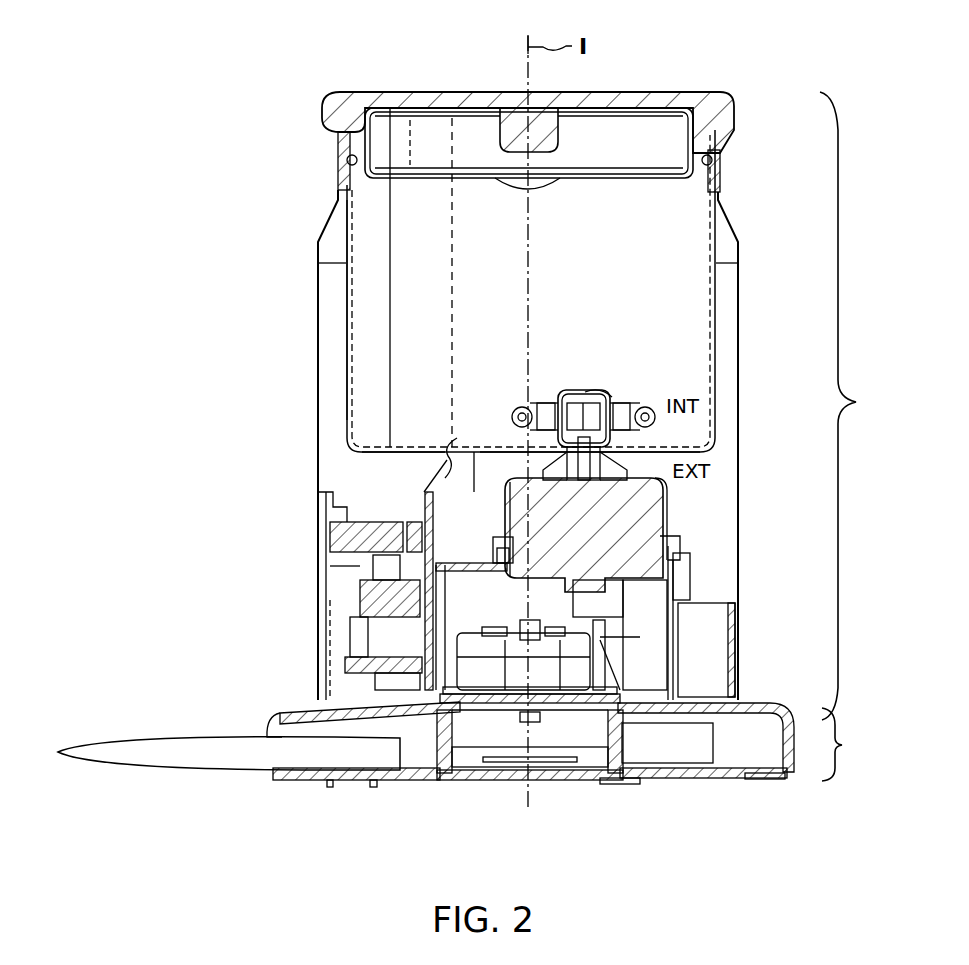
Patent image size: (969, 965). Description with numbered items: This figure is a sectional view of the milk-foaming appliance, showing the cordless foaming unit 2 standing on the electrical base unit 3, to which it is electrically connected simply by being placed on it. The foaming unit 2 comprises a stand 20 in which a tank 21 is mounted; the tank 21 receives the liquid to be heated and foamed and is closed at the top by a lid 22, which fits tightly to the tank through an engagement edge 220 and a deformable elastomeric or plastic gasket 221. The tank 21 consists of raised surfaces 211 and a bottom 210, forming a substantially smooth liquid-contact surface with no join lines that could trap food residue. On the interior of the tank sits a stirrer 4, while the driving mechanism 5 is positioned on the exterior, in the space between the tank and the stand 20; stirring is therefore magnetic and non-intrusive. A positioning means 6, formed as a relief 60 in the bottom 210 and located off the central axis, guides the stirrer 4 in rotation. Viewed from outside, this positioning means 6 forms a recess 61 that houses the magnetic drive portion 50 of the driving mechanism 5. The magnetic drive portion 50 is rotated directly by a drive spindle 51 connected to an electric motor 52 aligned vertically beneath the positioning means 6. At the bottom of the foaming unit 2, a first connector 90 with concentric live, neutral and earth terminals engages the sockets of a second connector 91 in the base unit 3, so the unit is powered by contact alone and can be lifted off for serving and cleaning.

The foaming unit 2 is at (850, 406).
The electrical base unit 3 is at (461, 760).
The stirrer 4 is at (589, 396).
The driving mechanism 5 is at (696, 494).
The positioning means 6 is at (597, 396).
The stand 20 is at (746, 290).
The tank 21 is at (722, 350).
The lid 22 is at (652, 88).
The magnetic drive portion 50 is at (620, 442).
The drive spindle 51 is at (583, 474).
The electric motor 52 is at (666, 547).
The relief 60 is at (565, 392).
The recess 61 is at (612, 397).
The first connector 90 is at (578, 684).
The second connector 91 is at (480, 706).
The bottom 210 is at (420, 446).
The raised surfaces 211 is at (352, 305).
The engagement edge 220 is at (718, 128).
The gasket 221 is at (718, 162).